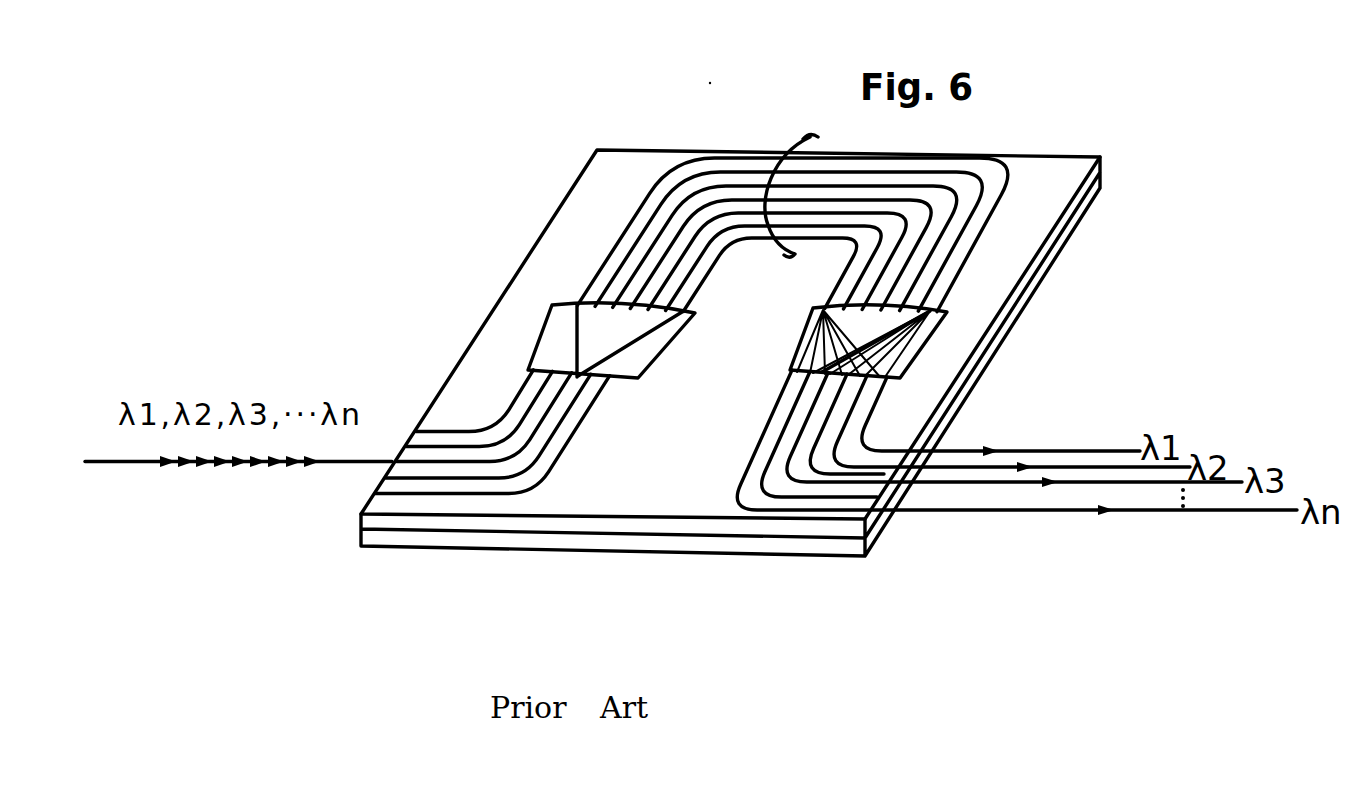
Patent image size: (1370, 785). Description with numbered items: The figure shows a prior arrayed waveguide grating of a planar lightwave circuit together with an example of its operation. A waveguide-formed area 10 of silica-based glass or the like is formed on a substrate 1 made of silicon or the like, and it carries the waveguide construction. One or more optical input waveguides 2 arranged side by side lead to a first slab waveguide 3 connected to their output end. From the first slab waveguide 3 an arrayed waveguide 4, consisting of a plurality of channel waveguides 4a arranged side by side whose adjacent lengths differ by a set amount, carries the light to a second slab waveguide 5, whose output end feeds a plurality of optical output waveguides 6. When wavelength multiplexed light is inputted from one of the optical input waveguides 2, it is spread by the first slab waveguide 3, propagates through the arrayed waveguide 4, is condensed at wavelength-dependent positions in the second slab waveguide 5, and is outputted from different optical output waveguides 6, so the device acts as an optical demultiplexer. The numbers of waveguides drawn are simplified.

The substrate 1 is at (1073, 222).
The optical input waveguide 2 is at (441, 431).
The first slab waveguide 3 is at (541, 337).
The arrayed waveguide 4 is at (806, 140).
The channel waveguide 4a is at (638, 220).
The second slab waveguide 5 is at (941, 341).
The optical output waveguide 6 is at (870, 440).
The waveguide-formed area 10 is at (1048, 196).